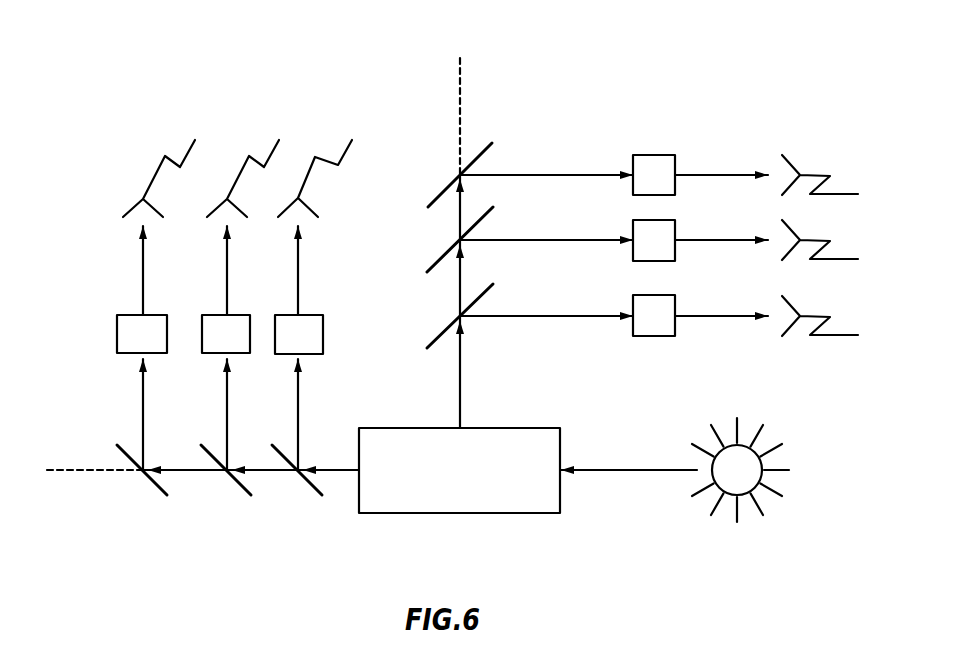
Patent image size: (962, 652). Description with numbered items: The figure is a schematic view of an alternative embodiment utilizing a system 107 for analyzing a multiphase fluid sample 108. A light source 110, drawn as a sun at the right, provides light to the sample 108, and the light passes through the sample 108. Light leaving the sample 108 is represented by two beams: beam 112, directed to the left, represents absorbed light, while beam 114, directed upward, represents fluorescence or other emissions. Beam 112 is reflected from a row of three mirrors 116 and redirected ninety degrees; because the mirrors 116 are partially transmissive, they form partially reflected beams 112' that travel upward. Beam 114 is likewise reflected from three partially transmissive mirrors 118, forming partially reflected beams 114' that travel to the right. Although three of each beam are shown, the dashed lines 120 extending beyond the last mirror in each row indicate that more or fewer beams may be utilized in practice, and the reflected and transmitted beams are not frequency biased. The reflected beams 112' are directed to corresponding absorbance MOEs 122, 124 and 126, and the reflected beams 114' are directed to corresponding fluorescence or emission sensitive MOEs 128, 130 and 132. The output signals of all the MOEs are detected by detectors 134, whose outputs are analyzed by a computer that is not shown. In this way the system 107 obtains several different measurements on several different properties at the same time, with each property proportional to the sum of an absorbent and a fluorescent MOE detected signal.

The system 107 is at (296, 557).
The multiphase fluid sample 108 is at (502, 513).
The light source 110 is at (742, 488).
The beam 112 is at (260, 425).
The partially reflected beams 112' is at (223, 348).
The beam 114 is at (519, 301).
The partially reflected beams 114' is at (614, 211).
The mirrors 116 is at (317, 493).
The partially transmissive mirrors 118 is at (440, 193).
The dashed lines 120 is at (458, 78).
The MOE 122 is at (125, 312).
The MOE 124 is at (209, 313).
The MOE 126 is at (282, 313).
The MOE 128 is at (662, 155).
The MOE 130 is at (675, 228).
The MOE 132 is at (660, 337).
The detectors 134 is at (138, 203).